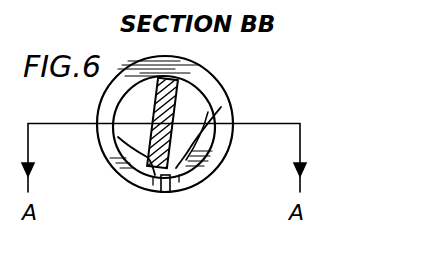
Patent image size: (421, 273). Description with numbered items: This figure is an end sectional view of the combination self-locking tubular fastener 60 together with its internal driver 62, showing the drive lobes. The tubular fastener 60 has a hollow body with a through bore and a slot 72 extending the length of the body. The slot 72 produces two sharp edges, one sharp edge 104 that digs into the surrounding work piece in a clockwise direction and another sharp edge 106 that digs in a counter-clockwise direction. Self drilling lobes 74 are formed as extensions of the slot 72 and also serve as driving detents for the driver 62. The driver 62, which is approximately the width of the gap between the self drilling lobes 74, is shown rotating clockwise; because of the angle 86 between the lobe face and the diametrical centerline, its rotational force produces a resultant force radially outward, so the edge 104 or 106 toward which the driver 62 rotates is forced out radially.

The tubular fastener 60 is at (220, 107).
The internal driver 62 is at (172, 74).
The angle 86 is at (216, 124).
The self drilling lobes 74 is at (145, 155).
The sharp edge 104 is at (161, 192).
The sharp edge 106 is at (172, 192).
The slot 72 is at (166, 200).